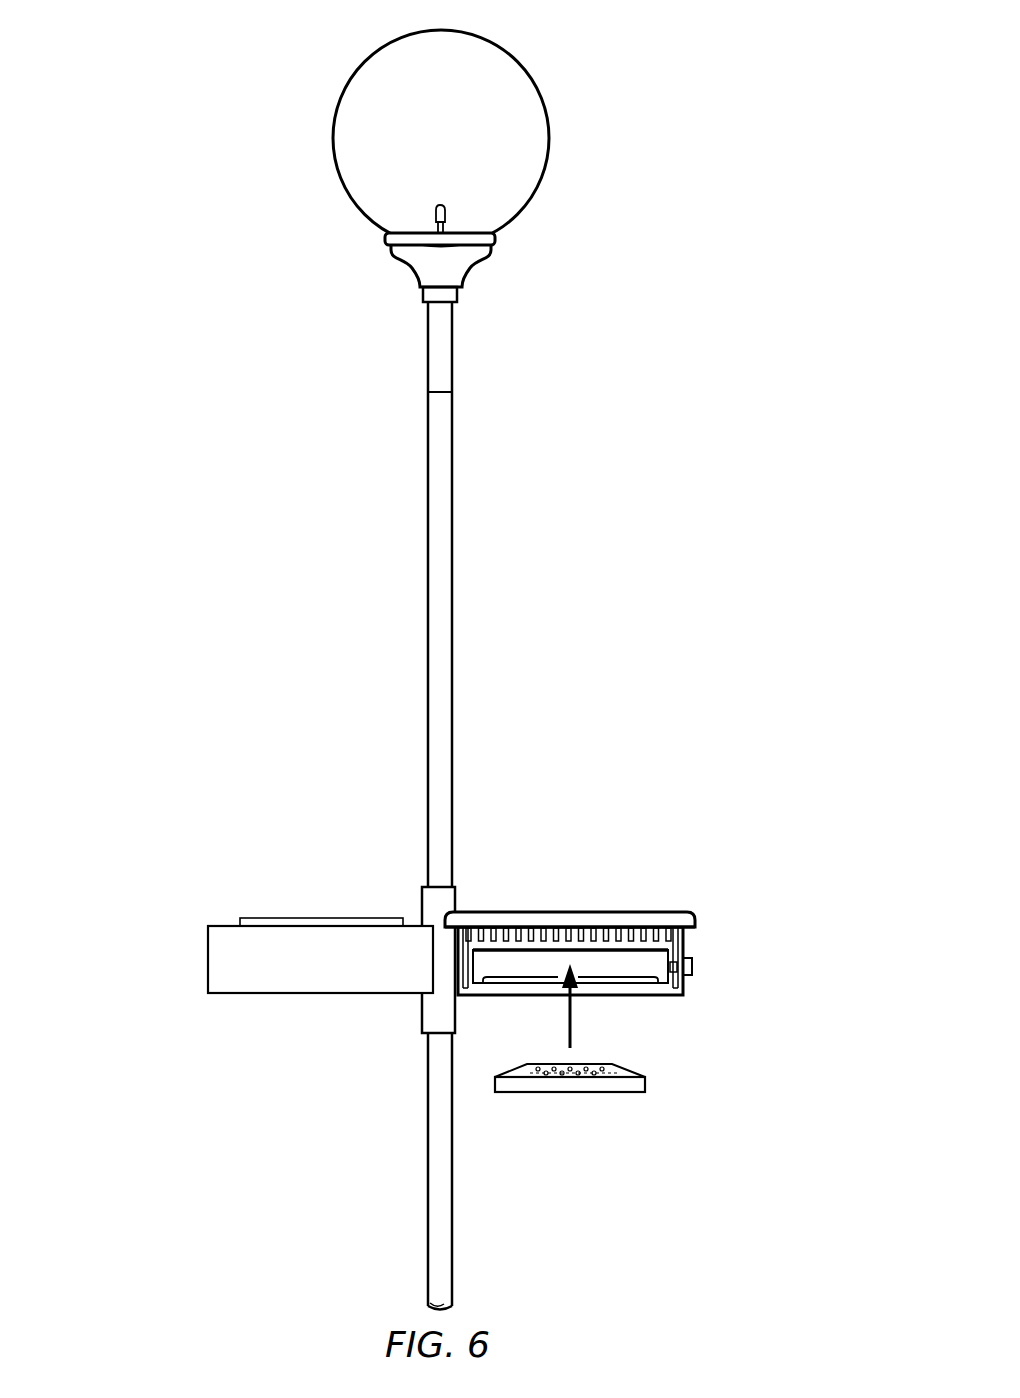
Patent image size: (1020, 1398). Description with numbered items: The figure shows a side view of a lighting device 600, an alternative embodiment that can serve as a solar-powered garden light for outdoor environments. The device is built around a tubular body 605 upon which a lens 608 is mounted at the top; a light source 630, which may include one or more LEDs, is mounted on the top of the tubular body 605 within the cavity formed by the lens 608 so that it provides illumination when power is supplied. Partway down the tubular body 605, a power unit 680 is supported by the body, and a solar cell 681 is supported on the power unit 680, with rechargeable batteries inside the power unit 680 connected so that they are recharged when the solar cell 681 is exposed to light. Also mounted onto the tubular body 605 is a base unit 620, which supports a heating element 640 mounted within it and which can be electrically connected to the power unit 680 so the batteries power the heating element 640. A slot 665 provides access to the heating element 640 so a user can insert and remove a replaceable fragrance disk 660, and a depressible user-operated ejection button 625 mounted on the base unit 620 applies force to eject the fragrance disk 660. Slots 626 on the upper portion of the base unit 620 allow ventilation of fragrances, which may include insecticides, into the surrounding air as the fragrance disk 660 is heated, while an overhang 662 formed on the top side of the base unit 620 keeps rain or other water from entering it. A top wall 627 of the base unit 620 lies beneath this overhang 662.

The lighting device 600 is at (138, 238).
The tubular body 605 is at (428, 530).
The lens 608 is at (553, 138).
The light source 630 is at (439, 203).
The base unit 620 is at (778, 907).
The ejection button 625 is at (692, 968).
The slots 626 is at (591, 928).
The top wall 627 is at (656, 912).
The overhang 662 is at (693, 914).
The heating element 640 is at (638, 983).
The slot 665 is at (517, 968).
The fragrance disk 660 is at (645, 1081).
The power unit 680 is at (192, 925).
The solar cell 681 is at (290, 918).